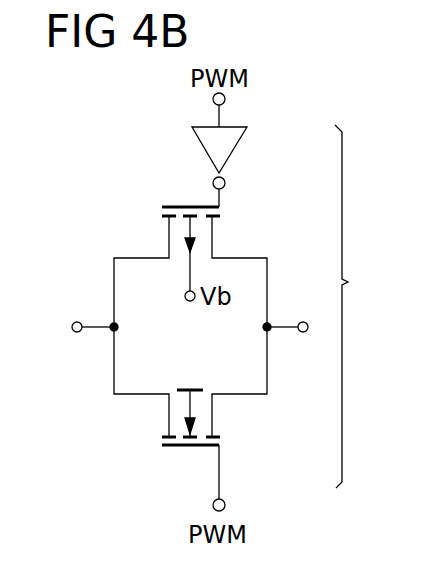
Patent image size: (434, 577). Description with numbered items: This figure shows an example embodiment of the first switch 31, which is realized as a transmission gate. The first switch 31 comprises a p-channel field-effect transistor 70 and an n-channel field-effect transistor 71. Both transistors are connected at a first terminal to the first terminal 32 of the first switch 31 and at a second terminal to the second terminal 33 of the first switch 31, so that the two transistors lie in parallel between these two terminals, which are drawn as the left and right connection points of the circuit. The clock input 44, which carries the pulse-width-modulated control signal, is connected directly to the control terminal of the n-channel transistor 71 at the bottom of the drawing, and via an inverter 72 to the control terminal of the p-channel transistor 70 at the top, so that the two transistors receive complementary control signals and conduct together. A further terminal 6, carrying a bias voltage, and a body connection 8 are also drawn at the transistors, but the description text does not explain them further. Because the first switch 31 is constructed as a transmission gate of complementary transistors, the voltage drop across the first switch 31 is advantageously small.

The clock input 44 is at (212, 100).
The inverter 72 is at (248, 152).
The p-channel field-effect transistor 70 is at (190, 205).
The n-channel field-effect transistor 71 is at (188, 455).
The body bias terminal Vb 6 is at (184, 296).
The body terminal of lower transistor 8 is at (197, 388).
The second terminal of the first switch 33 is at (77, 333).
The first terminal of the first switch 32 is at (303, 333).
The first switch 31 is at (359, 306).